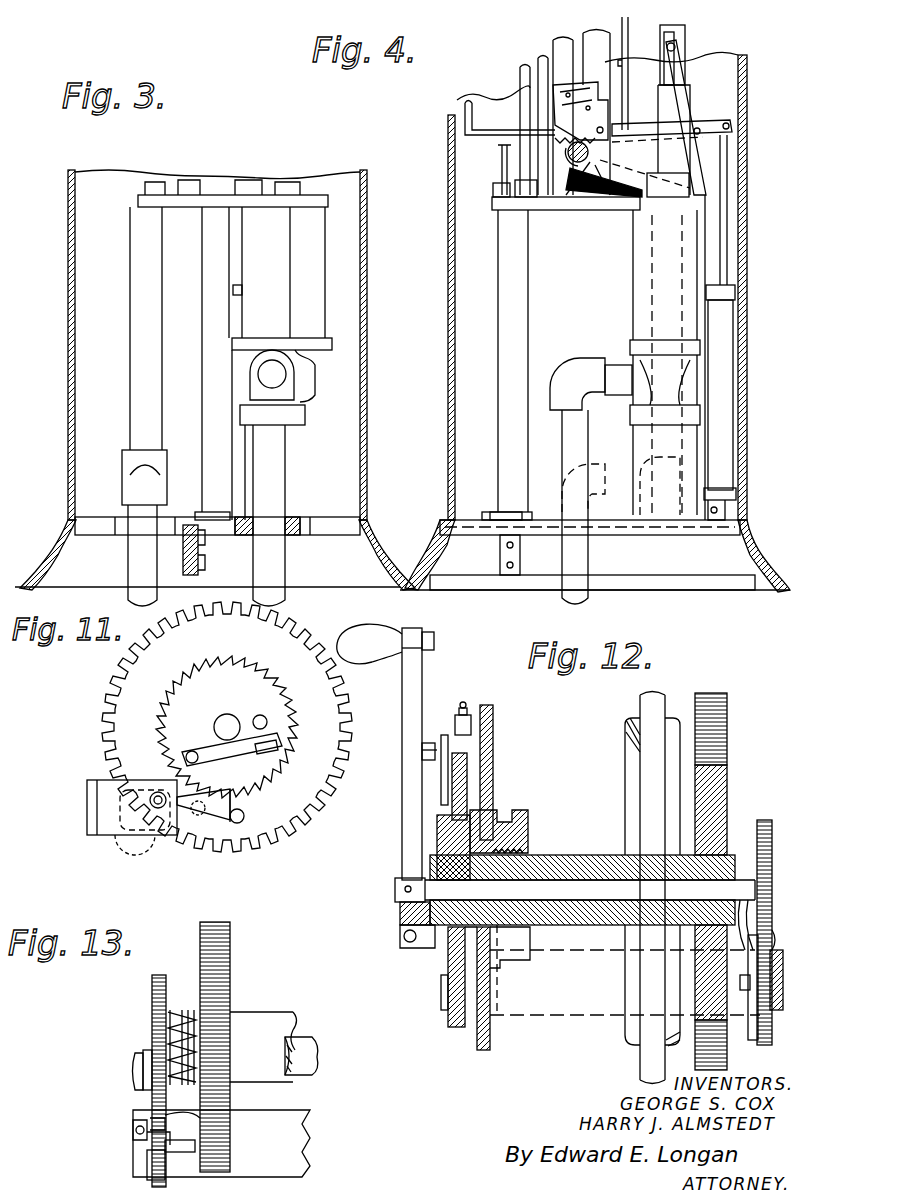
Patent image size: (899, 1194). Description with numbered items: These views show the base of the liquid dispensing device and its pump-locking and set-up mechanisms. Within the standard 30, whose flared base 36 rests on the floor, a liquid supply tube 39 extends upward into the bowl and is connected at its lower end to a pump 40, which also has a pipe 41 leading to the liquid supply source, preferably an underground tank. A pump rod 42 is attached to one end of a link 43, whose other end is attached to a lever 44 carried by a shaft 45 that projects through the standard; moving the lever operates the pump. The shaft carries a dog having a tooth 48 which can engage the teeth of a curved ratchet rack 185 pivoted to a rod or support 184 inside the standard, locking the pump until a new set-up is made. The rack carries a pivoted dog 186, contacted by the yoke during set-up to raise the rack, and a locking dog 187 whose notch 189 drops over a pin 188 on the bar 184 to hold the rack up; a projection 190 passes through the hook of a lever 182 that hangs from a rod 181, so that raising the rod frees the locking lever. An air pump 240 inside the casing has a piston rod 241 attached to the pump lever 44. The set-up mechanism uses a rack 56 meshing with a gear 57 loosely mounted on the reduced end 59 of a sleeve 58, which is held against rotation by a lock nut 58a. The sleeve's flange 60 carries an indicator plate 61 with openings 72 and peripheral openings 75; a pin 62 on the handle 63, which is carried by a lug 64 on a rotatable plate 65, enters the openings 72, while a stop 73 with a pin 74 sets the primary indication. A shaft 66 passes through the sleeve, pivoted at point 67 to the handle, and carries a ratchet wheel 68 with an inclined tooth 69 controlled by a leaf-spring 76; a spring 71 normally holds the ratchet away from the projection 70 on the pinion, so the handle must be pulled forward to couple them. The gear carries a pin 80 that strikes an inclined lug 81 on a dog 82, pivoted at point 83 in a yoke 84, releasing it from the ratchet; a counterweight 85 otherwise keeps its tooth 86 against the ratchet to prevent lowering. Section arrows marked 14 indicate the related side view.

In FIG. 12, the section line 14 is at (755, 814).
In FIG. 3, the standard 30 is at (68, 357).
In FIG. 4, the standard 30 is at (748, 268).
In FIG. 12, the standard 30 is at (493, 722).
In FIG. 3, the base flange 36 is at (52, 545).
In FIG. 4, the base flange 36 is at (768, 565).
In FIG. 3, the liquid supply tube 39 is at (135, 390).
In FIG. 4, the liquid supply tube 39 is at (688, 40).
In FIG. 3, the pump 40 is at (312, 278).
In FIG. 4, the pump 40 is at (632, 303).
In FIG. 3, the pipe 41 is at (270, 472).
In FIG. 4, the pipe 41 is at (562, 462).
In FIG. 4, the pump rod 42 is at (690, 76).
In FIG. 4, the link 43 is at (700, 108).
In FIG. 4, the lever 44 is at (735, 128).
In FIG. 4, the shaft 45 is at (577, 166).
In FIG. 4, the tooth 48 is at (600, 192).
In FIG. 12, the rack 56 is at (713, 696).
In FIG. 11, the gear 57 is at (305, 818).
In FIG. 12, the gear 57 is at (700, 970).
In FIG. 13, the gear 57 is at (215, 957).
In FIG. 12, the sleeve 58 is at (560, 866).
In FIG. 13, the sleeve 58 is at (290, 1020).
In FIG. 12, the lock nut 58a is at (497, 812).
In FIG. 12, the reduced end 59 is at (705, 862).
In FIG. 12, the flange 60 is at (480, 975).
In FIG. 12, the plate 61 is at (478, 985).
In FIG. 12, the pin 62 is at (437, 745).
In FIG. 12, the handle 63 is at (408, 748).
In FIG. 12, the lug 64 is at (400, 936).
In FIG. 12, the rotatable plate 65 is at (437, 830).
In FIG. 11, the shaft 66 is at (222, 715).
In FIG. 12, the shaft 66 is at (598, 890).
In FIG. 13, the shaft 66 is at (306, 1062).
In FIG. 12, the pivot point 67 is at (395, 888).
In FIG. 11, the ratchet wheel 68 is at (232, 716).
In FIG. 12, the ratchet wheel 68 is at (770, 822).
In FIG. 13, the ratchet wheel 68 is at (152, 982).
In FIG. 11, the projecting tooth 69 is at (282, 740).
In FIG. 13, the projecting tooth 69 is at (160, 1058).
In FIG. 11, the projection 70 is at (266, 717).
In FIG. 13, the projection 70 is at (200, 1040).
In FIG. 12, the spring 71 is at (741, 925).
In FIG. 13, the spring 71 is at (182, 1010).
In FIG. 12, the openings 72 is at (448, 1025).
In FIG. 12, the stop 73 is at (472, 718).
In FIG. 12, the pin 74 is at (463, 702).
In FIG. 12, the openings 75 is at (470, 760).
In FIG. 11, the leaf-spring 76 is at (218, 750).
In FIG. 12, the leaf-spring 76 is at (772, 950).
In FIG. 13, the leaf-spring 76 is at (140, 1075).
In FIG. 11, the pin 80 is at (237, 824).
In FIG. 12, the pin 80 is at (748, 1000).
In FIG. 13, the pin 80 is at (182, 1148).
In FIG. 11, the inclined lug 81 is at (213, 830).
In FIG. 12, the inclined lug 81 is at (762, 1012).
In FIG. 13, the inclined lug 81 is at (147, 1140).
In FIG. 11, the dog 82 is at (190, 815).
In FIG. 12, the dog 82 is at (770, 990).
In FIG. 13, the dog 82 is at (150, 1120).
In FIG. 11, the pivot point 83 is at (142, 809).
In FIG. 12, the pivot point 83 is at (739, 969).
In FIG. 13, the pivot point 83 is at (133, 1128).
In FIG. 11, the yoke 84 is at (87, 803).
In FIG. 12, the yoke 84 is at (785, 962).
In FIG. 13, the yoke 84 is at (305, 1145).
In FIG. 11, the counterweight 85 is at (127, 845).
In FIG. 12, the counterweight 85 is at (765, 1045).
In FIG. 13, the counterweight 85 is at (147, 1172).
In FIG. 11, the tooth 86 is at (232, 802).
In FIG. 12, the tooth 86 is at (700, 945).
In FIG. 13, the tooth 86 is at (170, 1115).
In FIG. 4, the rod 181 is at (605, 34).
In FIG. 4, the lever 182 is at (660, 55).
In FIG. 4, the rod or support 184 is at (627, 60).
In FIG. 4, the curved ratchet rack 185 is at (465, 118).
In FIG. 4, the pivoted dog 186 is at (578, 115).
In FIG. 4, the locking dog 187 is at (500, 98).
In FIG. 4, the pin 188 is at (651, 147).
In FIG. 4, the notch 189 is at (596, 98).
In FIG. 4, the projection 190 is at (562, 86).
In FIG. 4, the air pump 240 is at (738, 424).
In FIG. 4, the piston rod 241 is at (728, 212).